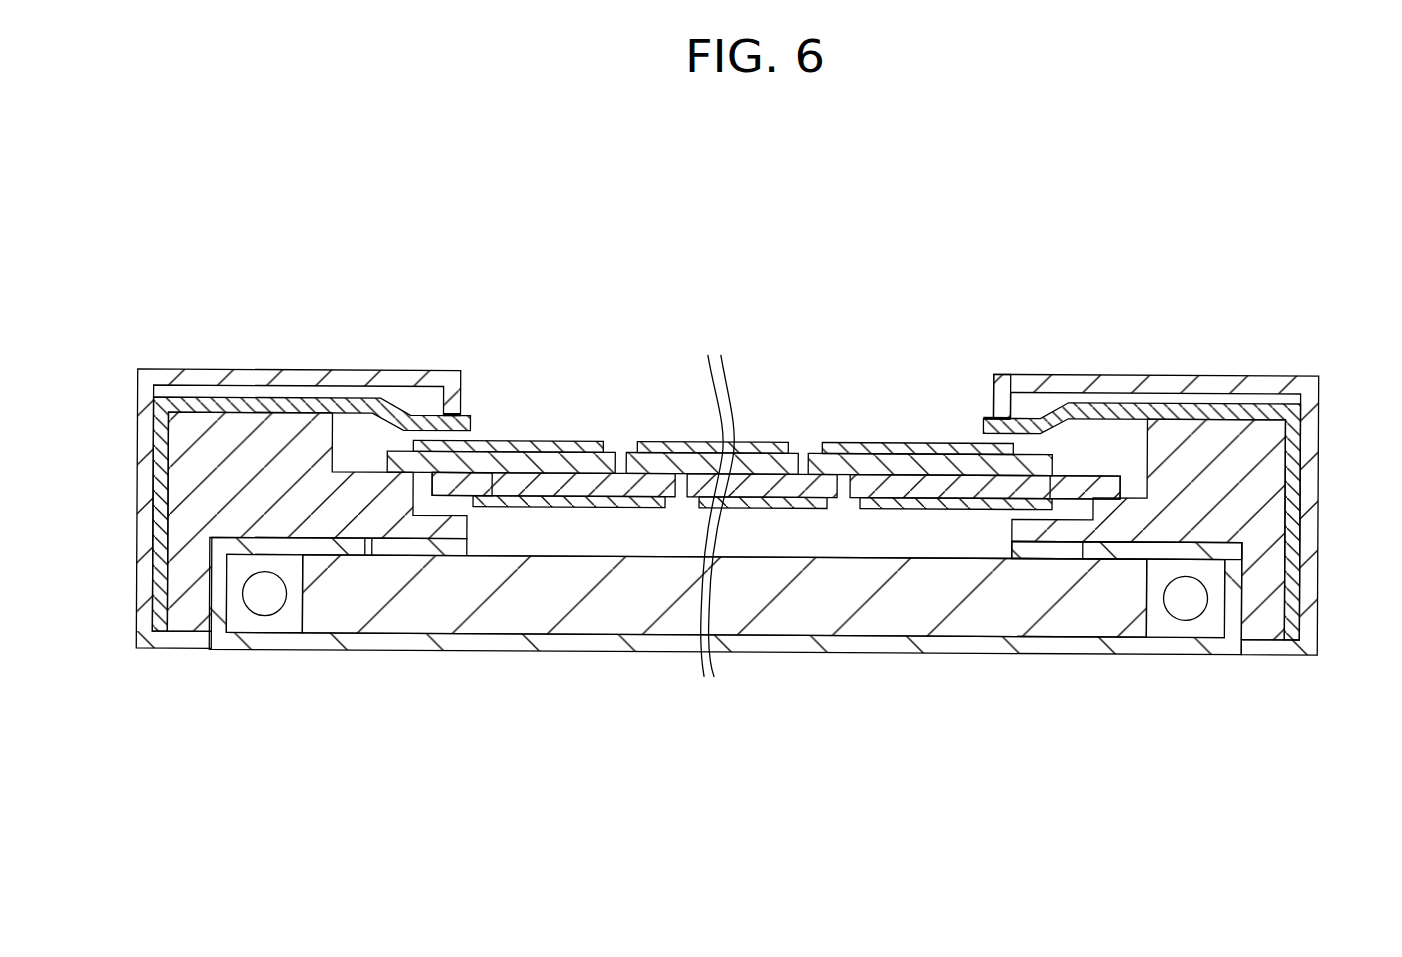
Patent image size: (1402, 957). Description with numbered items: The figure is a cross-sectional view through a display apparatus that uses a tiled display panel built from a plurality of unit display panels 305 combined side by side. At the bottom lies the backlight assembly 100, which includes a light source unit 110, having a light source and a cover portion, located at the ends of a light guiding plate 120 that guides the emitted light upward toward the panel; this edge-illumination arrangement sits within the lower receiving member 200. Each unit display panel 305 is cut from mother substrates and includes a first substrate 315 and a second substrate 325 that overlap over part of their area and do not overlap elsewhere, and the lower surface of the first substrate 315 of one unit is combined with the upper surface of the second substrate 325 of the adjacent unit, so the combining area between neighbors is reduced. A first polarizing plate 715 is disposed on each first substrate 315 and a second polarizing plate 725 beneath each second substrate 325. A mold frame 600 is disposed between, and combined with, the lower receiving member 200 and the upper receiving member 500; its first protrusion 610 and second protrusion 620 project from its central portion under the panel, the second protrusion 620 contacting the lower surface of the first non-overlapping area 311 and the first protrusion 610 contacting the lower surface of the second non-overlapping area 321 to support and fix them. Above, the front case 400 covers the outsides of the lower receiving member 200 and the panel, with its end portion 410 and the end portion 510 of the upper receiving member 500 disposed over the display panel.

The backlight assembly 100 is at (725, 646).
The light source unit 110 is at (1162, 633).
The light guiding plate 120 is at (1097, 630).
The lower receiving member 200 is at (946, 650).
The unit display panel 305 is at (727, 411).
The first non-overlapping area 311 is at (413, 481).
The first substrate 315 is at (523, 462).
The second non-overlapping area 321 is at (1078, 498).
The second substrate 325 is at (572, 484).
The front case 400 is at (1192, 478).
The end portion of the front case 410 is at (1012, 410).
The upper receiving member 500 is at (1293, 510).
The end portion of the upper receiving member 510 is at (1003, 415).
The mold frame 600 is at (1265, 589).
The first protrusion 610 is at (1083, 541).
The second protrusion 620 is at (385, 520).
The first polarizing plate 715 is at (427, 443).
The second polarizing plate 725 is at (531, 510).